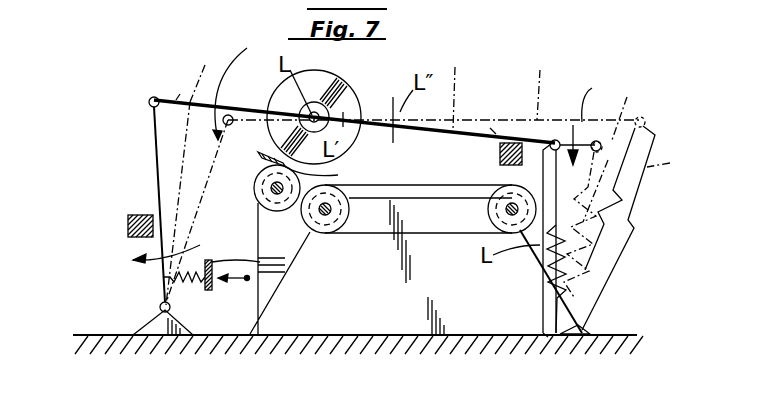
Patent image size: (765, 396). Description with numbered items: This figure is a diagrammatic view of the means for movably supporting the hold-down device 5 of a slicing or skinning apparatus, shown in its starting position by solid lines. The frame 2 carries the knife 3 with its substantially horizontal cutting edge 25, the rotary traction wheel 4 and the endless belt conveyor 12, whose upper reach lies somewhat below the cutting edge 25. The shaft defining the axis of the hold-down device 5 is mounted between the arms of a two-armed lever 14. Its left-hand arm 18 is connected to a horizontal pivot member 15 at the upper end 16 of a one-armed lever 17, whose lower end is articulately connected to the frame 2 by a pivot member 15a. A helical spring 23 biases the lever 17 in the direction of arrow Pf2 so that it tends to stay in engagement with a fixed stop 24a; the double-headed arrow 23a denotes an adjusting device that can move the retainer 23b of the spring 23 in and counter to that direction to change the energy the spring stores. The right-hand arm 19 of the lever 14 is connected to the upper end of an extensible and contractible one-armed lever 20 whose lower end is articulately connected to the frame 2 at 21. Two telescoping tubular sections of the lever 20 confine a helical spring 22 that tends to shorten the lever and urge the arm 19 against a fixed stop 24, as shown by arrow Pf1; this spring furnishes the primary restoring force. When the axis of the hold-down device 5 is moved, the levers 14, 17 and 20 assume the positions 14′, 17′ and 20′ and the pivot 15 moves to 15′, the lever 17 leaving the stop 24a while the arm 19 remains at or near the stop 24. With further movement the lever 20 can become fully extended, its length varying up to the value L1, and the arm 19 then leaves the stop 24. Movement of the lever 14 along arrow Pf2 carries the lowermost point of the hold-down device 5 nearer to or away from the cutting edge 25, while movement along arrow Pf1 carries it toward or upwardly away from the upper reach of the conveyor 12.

The frame 2 is at (396, 334).
The knife 3 is at (260, 157).
The traction wheel 4 is at (277, 203).
The hold-down device 5 is at (338, 93).
The belt conveyor 12 is at (432, 183).
The two-armed lever 14 is at (430, 133).
The position of the two-armed lever 14′ is at (461, 87).
The pivot member 15 is at (152, 97).
The position of the pivot member 15′ is at (206, 173).
The pivot member 15a is at (160, 305).
The upper end of the one-armed lever 16 is at (148, 108).
The one-armed lever 17 is at (157, 170).
The position of the one-armed lever 17′ is at (177, 197).
The left-hand arm 18 is at (177, 100).
The right-hand arm 19 is at (493, 130).
The extensible and contractible one-armed lever 20 is at (557, 210).
The position of the extensible lever 20′ is at (612, 185).
The articulate connection 21 is at (588, 327).
The helical spring 22 is at (552, 258).
The helical spring 23 is at (200, 282).
The adjusting device 23a is at (246, 279).
The retainer 23b is at (287, 265).
The fixed stop 24 is at (500, 153).
The fixed stop 24a is at (128, 226).
The cutting edge 25 is at (325, 172).
The arrow Pf1 is at (591, 115).
The arrow Pf2 is at (187, 243).
The extended lever length L1 is at (620, 223).